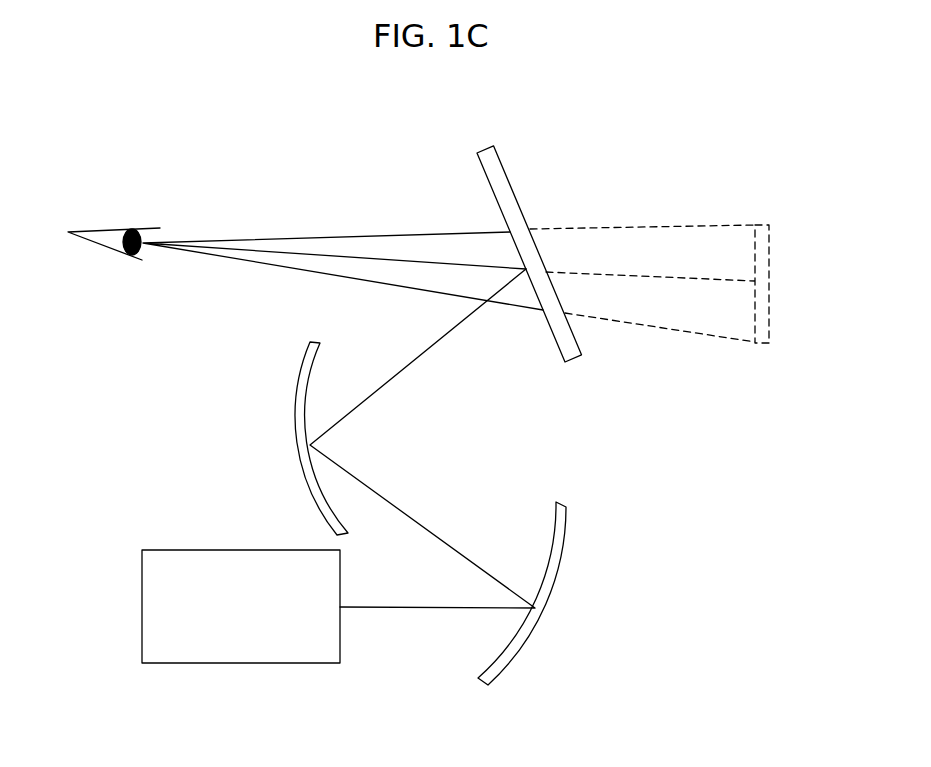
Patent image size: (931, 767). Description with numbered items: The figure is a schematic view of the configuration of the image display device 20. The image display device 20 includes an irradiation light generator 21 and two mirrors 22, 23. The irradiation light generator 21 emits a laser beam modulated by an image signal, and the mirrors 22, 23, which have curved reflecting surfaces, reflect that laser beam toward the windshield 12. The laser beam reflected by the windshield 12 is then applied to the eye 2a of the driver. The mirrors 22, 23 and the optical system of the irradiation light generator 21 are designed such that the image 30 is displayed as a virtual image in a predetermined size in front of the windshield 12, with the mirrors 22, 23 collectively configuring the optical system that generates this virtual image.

The eye 2a is at (113, 213).
The windshield 12 is at (510, 185).
The image 30 is at (769, 225).
The image display device 20 is at (630, 535).
The irradiation light generator 21 is at (156, 596).
The mirror 22 is at (523, 637).
The mirror 23 is at (294, 412).